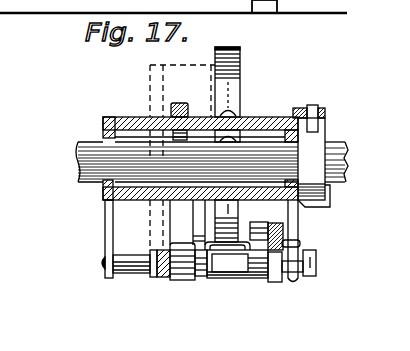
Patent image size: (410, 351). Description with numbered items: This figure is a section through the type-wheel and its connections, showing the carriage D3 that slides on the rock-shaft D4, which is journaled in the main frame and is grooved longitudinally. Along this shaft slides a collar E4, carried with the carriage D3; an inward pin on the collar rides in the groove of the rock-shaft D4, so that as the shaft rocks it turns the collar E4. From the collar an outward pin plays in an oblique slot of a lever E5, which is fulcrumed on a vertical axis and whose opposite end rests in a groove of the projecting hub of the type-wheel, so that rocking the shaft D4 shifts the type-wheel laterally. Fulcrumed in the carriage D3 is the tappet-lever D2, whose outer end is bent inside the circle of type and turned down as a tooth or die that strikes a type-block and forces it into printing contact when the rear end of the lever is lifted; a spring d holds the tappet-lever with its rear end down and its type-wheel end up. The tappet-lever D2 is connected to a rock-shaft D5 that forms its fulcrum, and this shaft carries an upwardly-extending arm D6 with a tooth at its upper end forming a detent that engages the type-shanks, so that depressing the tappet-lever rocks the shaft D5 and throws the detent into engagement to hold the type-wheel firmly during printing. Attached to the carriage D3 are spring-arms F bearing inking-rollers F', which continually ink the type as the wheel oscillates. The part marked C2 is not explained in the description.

The spring-arm F is at (240, 144).
The inking-roller F' is at (214, 276).
The pin C2 is at (310, 109).
The lever E5 is at (325, 113).
The collar E4 is at (311, 159).
The carriage D3 is at (127, 118).
The rock-shaft D4 is at (212, 162).
The arm D6 is at (160, 227).
The rock-shaft D5 is at (236, 260).
The tappet-lever D2 is at (284, 241).
The spring d is at (300, 245).